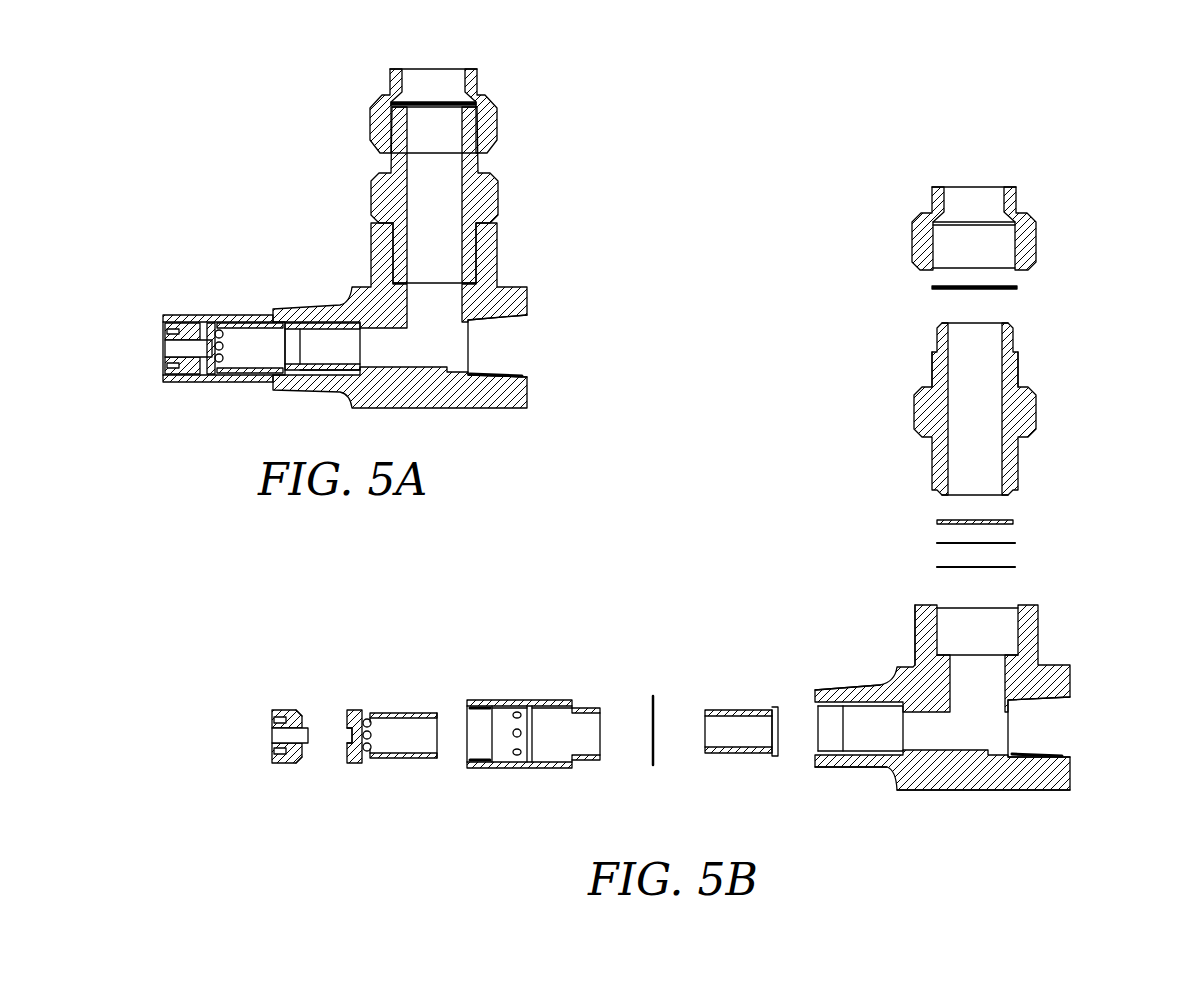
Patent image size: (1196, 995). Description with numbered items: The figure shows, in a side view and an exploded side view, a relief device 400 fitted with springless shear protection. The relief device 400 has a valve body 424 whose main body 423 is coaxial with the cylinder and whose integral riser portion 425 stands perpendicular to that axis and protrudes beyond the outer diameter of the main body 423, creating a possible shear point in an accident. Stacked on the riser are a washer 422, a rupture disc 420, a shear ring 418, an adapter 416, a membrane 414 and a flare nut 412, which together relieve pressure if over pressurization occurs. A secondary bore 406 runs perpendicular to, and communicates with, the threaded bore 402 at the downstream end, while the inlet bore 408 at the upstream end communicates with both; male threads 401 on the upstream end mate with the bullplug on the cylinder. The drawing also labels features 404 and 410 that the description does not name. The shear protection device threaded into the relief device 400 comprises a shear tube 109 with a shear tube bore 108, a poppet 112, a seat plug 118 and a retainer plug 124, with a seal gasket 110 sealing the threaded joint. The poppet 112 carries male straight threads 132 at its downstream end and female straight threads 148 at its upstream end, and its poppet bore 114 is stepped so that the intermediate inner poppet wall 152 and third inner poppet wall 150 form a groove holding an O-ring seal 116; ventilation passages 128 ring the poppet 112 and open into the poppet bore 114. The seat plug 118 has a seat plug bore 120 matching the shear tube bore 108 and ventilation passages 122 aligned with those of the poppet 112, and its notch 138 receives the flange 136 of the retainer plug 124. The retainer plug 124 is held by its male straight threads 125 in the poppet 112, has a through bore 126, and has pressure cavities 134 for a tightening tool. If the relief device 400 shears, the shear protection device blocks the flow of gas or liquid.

In FIG. 5A, the relief device 400 is at (577, 128).
In FIG. 5B, the relief device 400 is at (1067, 210).
In FIG. 5A, the male straight (or tapered) threads 401 is at (312, 305).
In FIG. 5B, the male straight (or tapered) threads 401 is at (870, 687).
In FIG. 5A, the female straight (or tapered) threads / bore 402 is at (508, 370).
In FIG. 5B, the female straight (or tapered) threads / bore 402 is at (1055, 752).
In FIG. 5A, the conical seat 404 is at (510, 332).
In FIG. 5B, the conical seat 404 is at (1058, 717).
In FIG. 5A, the secondary bore 406 is at (452, 214).
In FIG. 5B, the secondary bore 406 is at (992, 420).
In FIG. 5A, the inlet bore 408 is at (355, 360).
In FIG. 5B, the inlet bore 408 is at (894, 741).
In FIG. 5B, the retaining ring 410 is at (835, 758).
In FIG. 5B, the flare nut 412 is at (1037, 250).
In FIG. 5B, the membrane 414 is at (1018, 288).
In FIG. 5B, the adapter 416 is at (1018, 358).
In FIG. 5B, the shear ring 418 is at (1013, 522).
In FIG. 5B, the rupture disc 420 is at (1015, 543).
In FIG. 5B, the washer 422 is at (1015, 567).
In FIG. 5B, the main body 423 is at (978, 790).
In FIG. 5B, the valve body 424 is at (1040, 622).
In FIG. 5B, the riser portion 425 is at (915, 633).
In FIG. 5B, the shear tube bore 108 is at (763, 741).
In FIG. 5A, the shear tube 109 is at (320, 368).
In FIG. 5B, the shear tube 109 is at (737, 708).
In FIG. 5B, the seal gasket 110 is at (653, 691).
In FIG. 5A, the poppet 112 is at (250, 383).
In FIG. 5B, the poppet 112 is at (548, 700).
In FIG. 5B, the poppet bore 114 is at (477, 731).
In FIG. 5B, the O-ring seal 116 is at (525, 705).
In FIG. 5A, the seat plug 118 is at (208, 380).
In FIG. 5B, the seat plug 118 is at (390, 705).
In FIG. 5B, the seat plug bore 120 is at (424, 748).
In FIG. 5B, the ventilation passages 122 is at (372, 753).
In FIG. 5A, the retainer plug 124 is at (165, 350).
In FIG. 5B, the retainer plug 124 is at (282, 705).
In FIG. 5B, the male straight threads 125 is at (285, 763).
In FIG. 5B, the bore 126 is at (282, 737).
In FIG. 5B, the ventilation passages 128 is at (517, 731).
In FIG. 5B, the male straight threads 132 is at (775, 754).
In FIG. 5B, the pressure cavities 134 is at (272, 718).
In FIG. 5B, the flange 136 is at (303, 727).
In FIG. 5B, the notch 138 is at (347, 735).
In FIG. 5B, the female straight threads 148 is at (473, 765).
In FIG. 5B, the third inner poppet wall 150 is at (503, 765).
In FIG. 5B, the intermediate inner poppet wall 152 is at (545, 765).